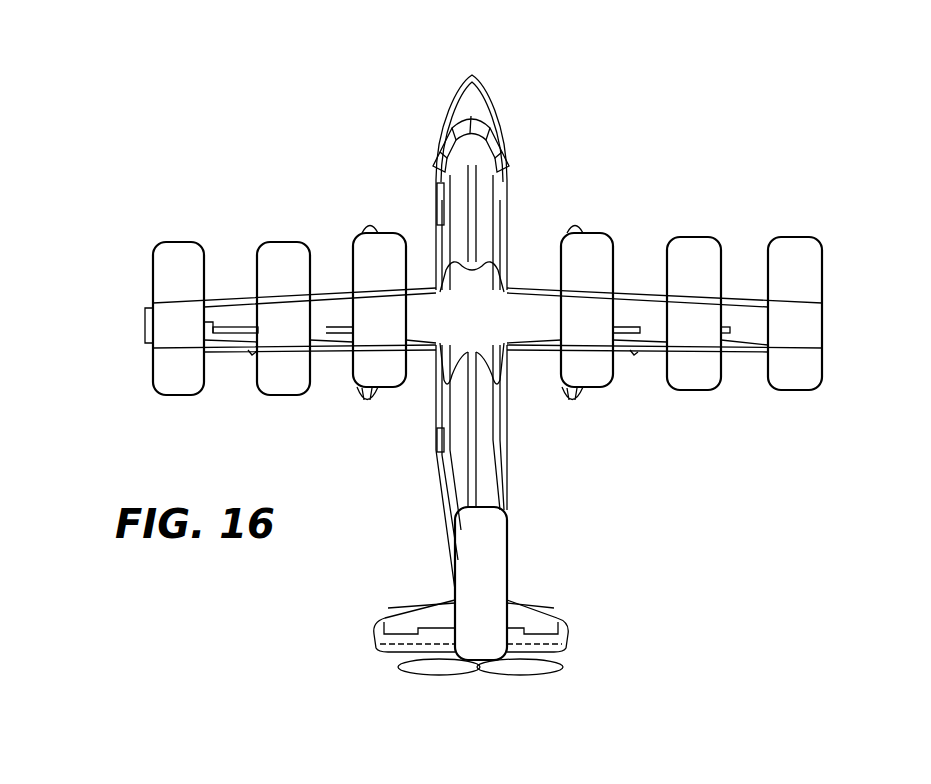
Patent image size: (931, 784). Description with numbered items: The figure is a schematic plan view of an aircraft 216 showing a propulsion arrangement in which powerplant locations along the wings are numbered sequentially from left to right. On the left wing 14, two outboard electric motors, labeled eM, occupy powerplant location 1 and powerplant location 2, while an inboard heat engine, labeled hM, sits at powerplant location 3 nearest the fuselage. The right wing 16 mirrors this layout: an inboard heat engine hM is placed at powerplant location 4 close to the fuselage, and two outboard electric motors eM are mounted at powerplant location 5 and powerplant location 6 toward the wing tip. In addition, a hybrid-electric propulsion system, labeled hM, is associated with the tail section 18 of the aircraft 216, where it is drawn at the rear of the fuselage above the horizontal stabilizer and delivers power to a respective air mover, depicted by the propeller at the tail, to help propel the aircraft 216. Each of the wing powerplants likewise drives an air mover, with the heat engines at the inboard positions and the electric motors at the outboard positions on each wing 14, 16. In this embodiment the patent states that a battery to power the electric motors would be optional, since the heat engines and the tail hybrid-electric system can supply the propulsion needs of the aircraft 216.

The aircraft 216 is at (116, 193).
The powerplant location number one 1 is at (178, 284).
The powerplant location number two 2 is at (283, 284).
The powerplant location number three 3 is at (379, 287).
The powerplant location number four 4 is at (587, 287).
The powerplant location number five 5 is at (694, 282).
The powerplant location number six 6 is at (795, 282).
The left wing 14 is at (332, 358).
The right wing 16 is at (652, 355).
The tail section 18 is at (523, 573).